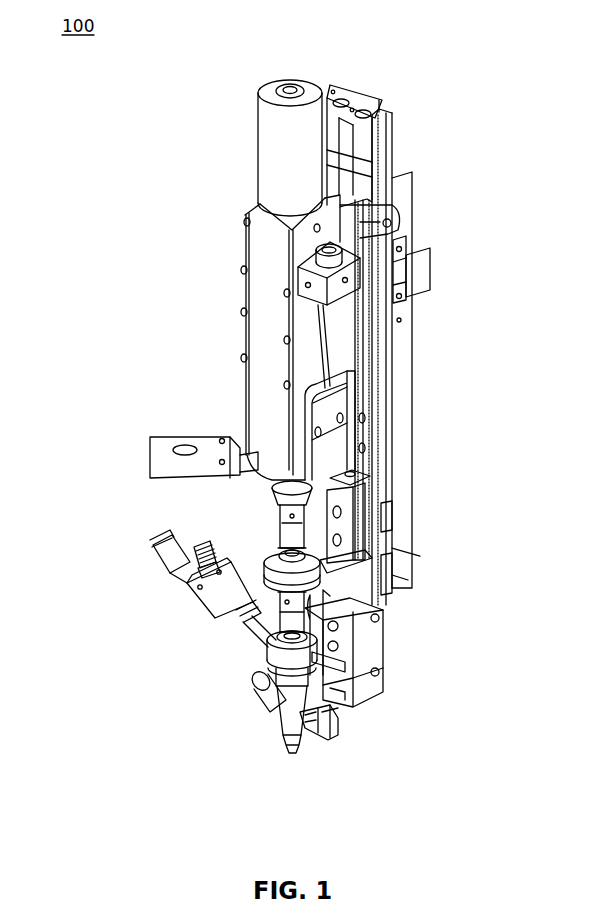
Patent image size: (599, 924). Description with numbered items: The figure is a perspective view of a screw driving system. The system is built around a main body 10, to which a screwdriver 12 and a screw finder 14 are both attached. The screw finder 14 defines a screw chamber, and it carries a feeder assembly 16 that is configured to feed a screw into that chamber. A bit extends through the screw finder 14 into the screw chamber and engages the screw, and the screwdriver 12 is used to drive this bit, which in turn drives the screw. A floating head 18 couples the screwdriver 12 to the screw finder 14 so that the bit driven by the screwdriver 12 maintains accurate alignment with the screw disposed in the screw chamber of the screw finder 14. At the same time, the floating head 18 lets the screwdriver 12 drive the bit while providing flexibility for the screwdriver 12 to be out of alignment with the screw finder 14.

The main body 10 is at (397, 366).
The screwdriver 12 is at (262, 258).
The screw finder 14 is at (212, 696).
The feeder assembly 16 is at (202, 596).
The floating head 18 is at (265, 553).